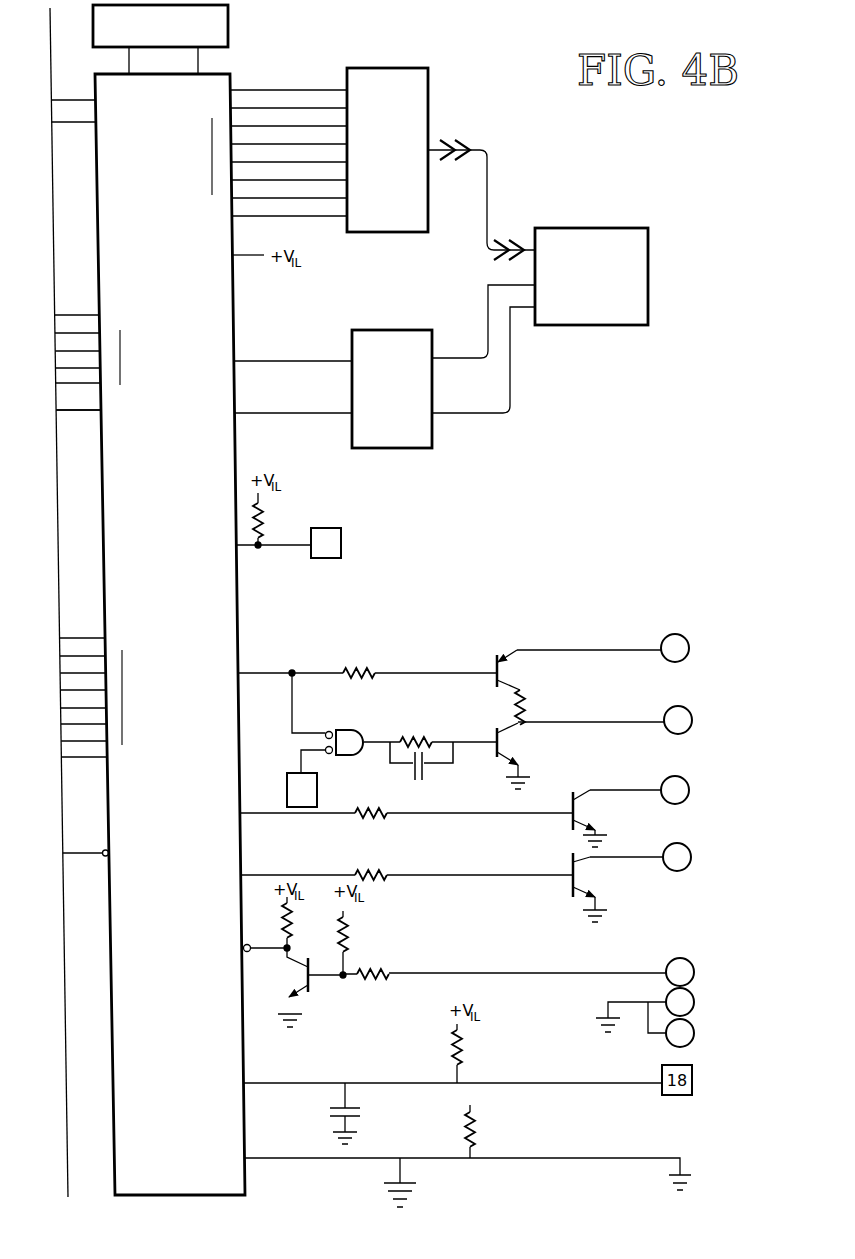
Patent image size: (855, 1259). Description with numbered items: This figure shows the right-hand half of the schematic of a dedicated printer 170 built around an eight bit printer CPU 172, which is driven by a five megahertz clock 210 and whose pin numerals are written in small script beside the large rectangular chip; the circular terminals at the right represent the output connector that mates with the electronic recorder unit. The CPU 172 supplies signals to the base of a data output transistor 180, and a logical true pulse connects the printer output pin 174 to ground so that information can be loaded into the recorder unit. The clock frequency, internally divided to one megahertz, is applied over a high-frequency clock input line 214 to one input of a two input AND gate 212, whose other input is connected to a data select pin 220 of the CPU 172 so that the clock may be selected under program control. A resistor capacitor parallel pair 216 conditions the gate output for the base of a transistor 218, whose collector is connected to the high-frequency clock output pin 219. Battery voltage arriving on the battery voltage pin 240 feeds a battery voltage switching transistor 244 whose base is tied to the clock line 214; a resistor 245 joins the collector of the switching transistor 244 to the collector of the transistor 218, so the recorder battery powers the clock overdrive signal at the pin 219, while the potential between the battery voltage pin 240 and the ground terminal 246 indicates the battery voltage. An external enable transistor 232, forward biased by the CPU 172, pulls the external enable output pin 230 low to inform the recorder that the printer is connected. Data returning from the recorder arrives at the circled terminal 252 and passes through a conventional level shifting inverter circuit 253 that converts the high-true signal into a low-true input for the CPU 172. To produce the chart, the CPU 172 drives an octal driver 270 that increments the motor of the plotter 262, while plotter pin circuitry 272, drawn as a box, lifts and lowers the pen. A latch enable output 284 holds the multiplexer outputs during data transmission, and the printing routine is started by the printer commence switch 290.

The dedicated printer 170 is at (478, 541).
The printer CPU 172 is at (238, 596).
The printer output pin 174 is at (689, 847).
The data output transistor 180 is at (572, 888).
The 5 MHz clock 210 is at (229, 22).
The AND gate 212 is at (345, 729).
The high-frequency clock input line 214 is at (287, 670).
The resistor capacitor parallel pair 216 is at (414, 730).
The transistor 218 is at (513, 733).
The high-frequency clock output pin 219 is at (690, 709).
The data select pin 220 is at (96, 99).
The external enable output pin 230 is at (687, 779).
The external enable transistor 232 is at (572, 816).
The battery voltage pin 240 is at (687, 636).
The battery voltage switching transistor 244 is at (510, 652).
The resistor 245 is at (528, 690).
The ground terminal 246 is at (693, 993).
The output terminal 252 is at (692, 962).
The level shifting inverter circuit 253 is at (366, 942).
The plotter 262 is at (598, 228).
The octal driver 270 is at (396, 68).
The plotter pin circuitry 272 is at (392, 330).
The latch enable output 284 is at (98, 418).
The printer commence switch 290 is at (670, 1157).